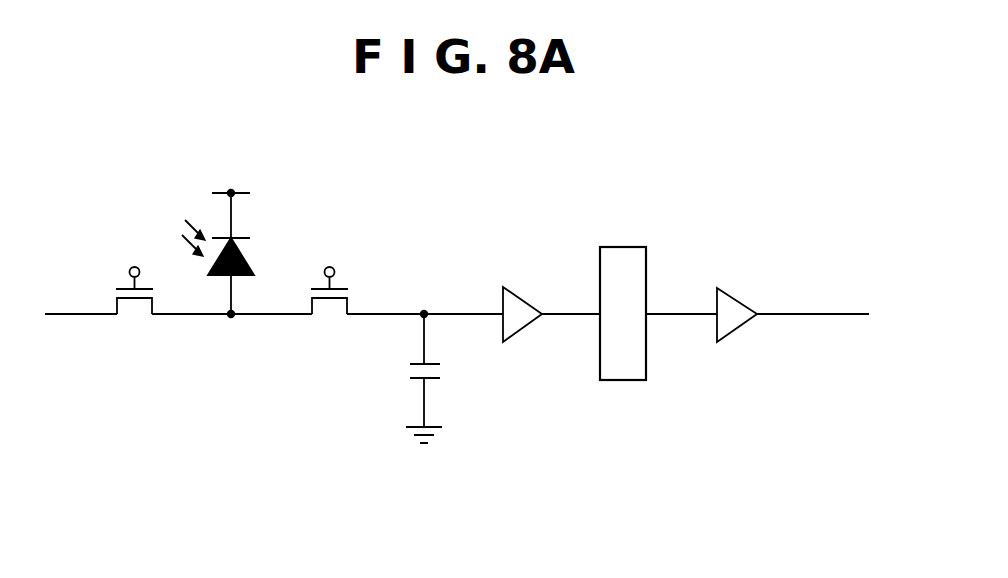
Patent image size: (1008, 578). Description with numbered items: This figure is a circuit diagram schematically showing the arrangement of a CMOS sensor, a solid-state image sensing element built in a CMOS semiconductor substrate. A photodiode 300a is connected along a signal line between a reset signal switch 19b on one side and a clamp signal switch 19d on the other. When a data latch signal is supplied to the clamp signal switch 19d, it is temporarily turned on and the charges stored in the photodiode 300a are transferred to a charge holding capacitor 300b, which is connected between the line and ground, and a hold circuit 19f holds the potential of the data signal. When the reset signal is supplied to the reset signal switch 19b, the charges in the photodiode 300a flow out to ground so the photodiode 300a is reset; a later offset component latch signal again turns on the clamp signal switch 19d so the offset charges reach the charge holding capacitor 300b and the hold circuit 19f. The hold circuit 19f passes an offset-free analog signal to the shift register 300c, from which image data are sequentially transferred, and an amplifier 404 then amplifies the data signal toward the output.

The reset signal switch 19b is at (120, 288).
The photodiode 300a is at (247, 262).
The clamp signal switch 19d is at (340, 283).
The charge holding capacitor 300b is at (407, 370).
The hold circuit 19f is at (515, 307).
The shift register 300c is at (620, 267).
The amplifier 404 is at (728, 316).